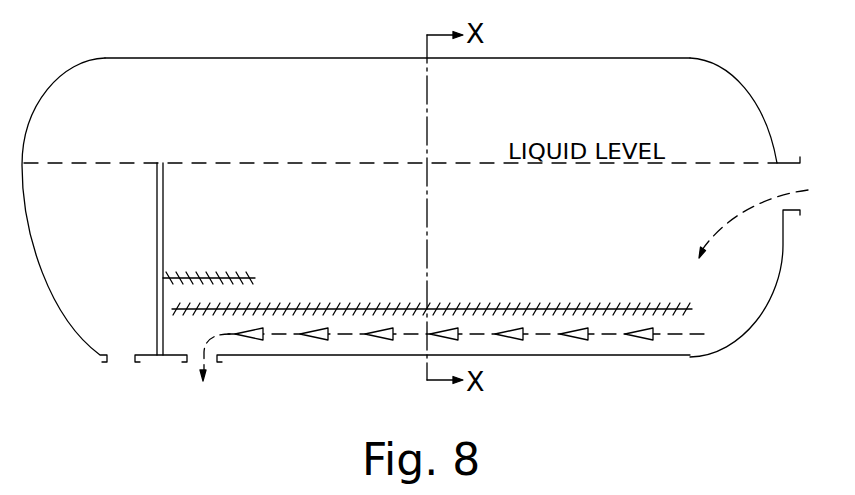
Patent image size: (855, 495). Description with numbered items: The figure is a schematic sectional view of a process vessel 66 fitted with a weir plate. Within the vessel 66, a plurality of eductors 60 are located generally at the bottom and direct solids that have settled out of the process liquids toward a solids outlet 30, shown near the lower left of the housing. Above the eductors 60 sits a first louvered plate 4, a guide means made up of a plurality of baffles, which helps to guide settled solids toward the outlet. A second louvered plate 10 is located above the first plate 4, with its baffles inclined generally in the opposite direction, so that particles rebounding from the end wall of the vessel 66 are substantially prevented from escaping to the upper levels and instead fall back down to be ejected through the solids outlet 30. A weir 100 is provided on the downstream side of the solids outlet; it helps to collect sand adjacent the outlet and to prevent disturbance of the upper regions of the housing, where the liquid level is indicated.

The vessel 66 is at (560, 58).
The weir 100 is at (165, 181).
The second louvered plate 10 is at (190, 277).
The first louvered plate 4 is at (500, 309).
The solids outlet 30 is at (221, 362).
The eductors 60 is at (381, 340).